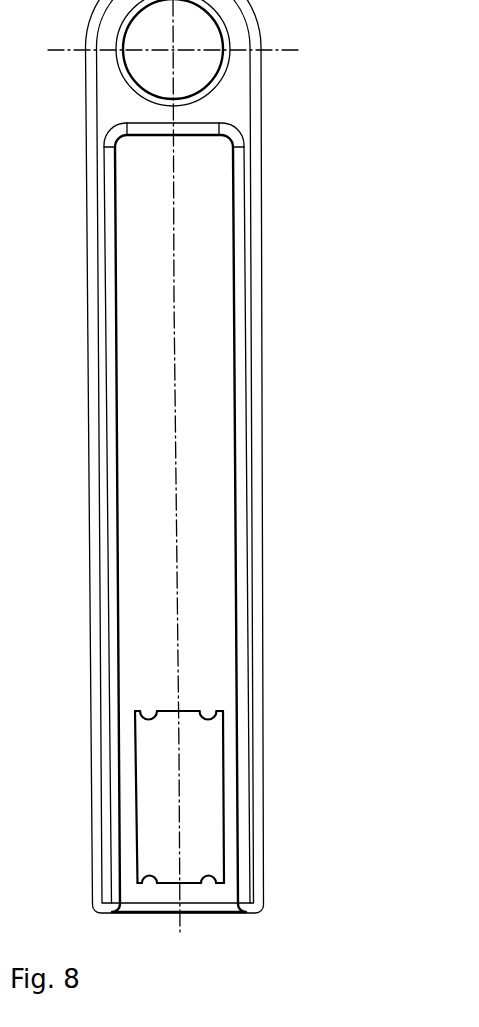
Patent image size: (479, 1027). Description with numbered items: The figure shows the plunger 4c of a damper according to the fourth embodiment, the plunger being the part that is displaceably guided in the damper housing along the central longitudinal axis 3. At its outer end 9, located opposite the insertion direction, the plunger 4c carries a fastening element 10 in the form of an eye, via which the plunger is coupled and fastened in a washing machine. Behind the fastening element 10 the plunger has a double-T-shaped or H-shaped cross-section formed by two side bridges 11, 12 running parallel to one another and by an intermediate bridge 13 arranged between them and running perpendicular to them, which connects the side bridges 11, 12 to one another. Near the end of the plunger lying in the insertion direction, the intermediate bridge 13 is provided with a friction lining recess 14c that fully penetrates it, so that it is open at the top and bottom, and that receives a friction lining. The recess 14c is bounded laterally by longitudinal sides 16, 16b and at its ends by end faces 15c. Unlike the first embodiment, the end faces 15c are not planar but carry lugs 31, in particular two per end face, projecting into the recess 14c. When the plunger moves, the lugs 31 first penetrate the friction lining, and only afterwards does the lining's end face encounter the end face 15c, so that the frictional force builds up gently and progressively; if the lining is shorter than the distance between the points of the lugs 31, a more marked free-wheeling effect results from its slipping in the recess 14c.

The central longitudinal axis 3 is at (173, 233).
The plunger 4c is at (78, 361).
The outer end 9 is at (88, 72).
The fastening element 10 is at (142, 38).
The side bridge 11 is at (104, 509).
The side bridge 12 is at (251, 507).
The intermediate bridge 13 is at (132, 574).
The friction lining recess 14c is at (155, 781).
The end face 15c is at (167, 712).
The longitudinal side 16 is at (134, 822).
The longitudinal side 16b is at (228, 822).
The lug 31 is at (204, 711).